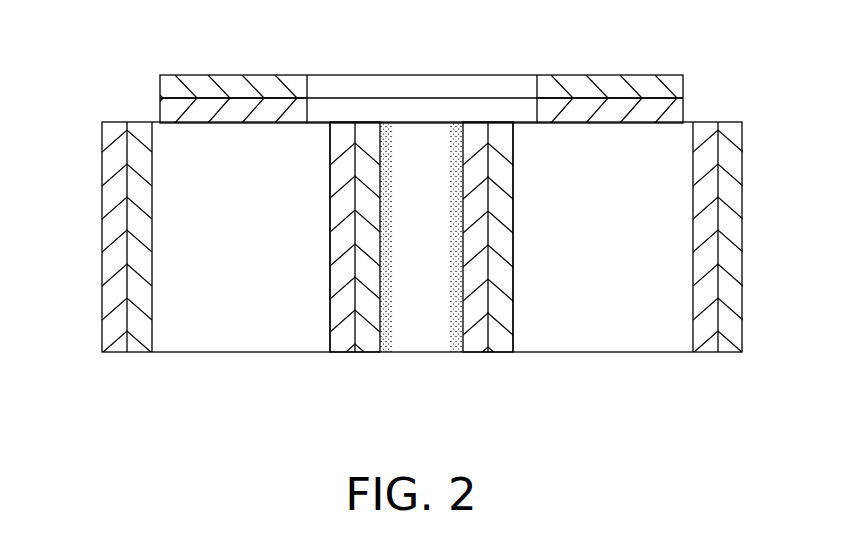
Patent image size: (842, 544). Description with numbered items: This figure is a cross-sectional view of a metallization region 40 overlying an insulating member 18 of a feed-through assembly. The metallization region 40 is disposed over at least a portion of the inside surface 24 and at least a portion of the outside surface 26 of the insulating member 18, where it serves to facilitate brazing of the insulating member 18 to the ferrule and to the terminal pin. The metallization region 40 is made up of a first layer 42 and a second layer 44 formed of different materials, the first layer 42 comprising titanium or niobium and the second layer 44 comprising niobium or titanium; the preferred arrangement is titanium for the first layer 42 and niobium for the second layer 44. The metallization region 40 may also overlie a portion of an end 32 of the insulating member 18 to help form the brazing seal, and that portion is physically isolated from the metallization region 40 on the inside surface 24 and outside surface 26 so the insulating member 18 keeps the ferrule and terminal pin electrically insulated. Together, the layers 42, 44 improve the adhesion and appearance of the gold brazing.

The insulating member 18 is at (218, 335).
The inside surface 24 is at (330, 308).
The outside surface 26 is at (152, 310).
The end 32 is at (205, 123).
The metallization region 40 is at (382, 358).
The first layer 42 is at (158, 118).
The second layer 44 is at (160, 90).